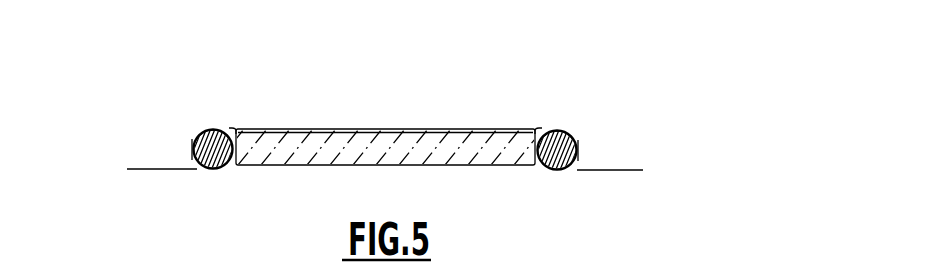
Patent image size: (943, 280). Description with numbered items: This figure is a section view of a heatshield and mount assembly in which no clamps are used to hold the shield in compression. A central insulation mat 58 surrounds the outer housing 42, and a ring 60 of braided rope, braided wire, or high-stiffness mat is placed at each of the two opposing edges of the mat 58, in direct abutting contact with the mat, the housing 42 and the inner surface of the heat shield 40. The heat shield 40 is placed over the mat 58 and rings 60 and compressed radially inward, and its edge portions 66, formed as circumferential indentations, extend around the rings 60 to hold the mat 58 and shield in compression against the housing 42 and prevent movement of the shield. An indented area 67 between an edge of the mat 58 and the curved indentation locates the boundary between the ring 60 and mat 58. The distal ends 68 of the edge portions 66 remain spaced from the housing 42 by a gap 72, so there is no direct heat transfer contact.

The heat shield 40 is at (482, 128).
The outer housing 42 is at (627, 170).
The insulation mat 58 is at (465, 155).
The ring 60 is at (215, 170).
The edge portion 66 is at (223, 132).
The indented area 67 is at (228, 128).
The distal end 68 is at (192, 157).
The gap 72 is at (178, 169).